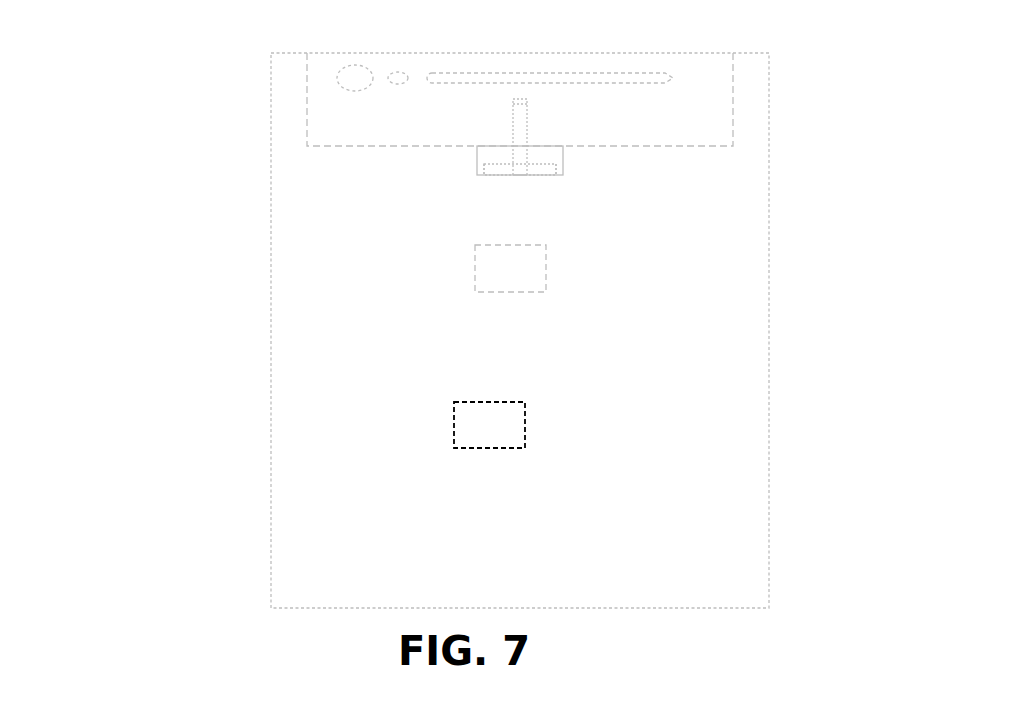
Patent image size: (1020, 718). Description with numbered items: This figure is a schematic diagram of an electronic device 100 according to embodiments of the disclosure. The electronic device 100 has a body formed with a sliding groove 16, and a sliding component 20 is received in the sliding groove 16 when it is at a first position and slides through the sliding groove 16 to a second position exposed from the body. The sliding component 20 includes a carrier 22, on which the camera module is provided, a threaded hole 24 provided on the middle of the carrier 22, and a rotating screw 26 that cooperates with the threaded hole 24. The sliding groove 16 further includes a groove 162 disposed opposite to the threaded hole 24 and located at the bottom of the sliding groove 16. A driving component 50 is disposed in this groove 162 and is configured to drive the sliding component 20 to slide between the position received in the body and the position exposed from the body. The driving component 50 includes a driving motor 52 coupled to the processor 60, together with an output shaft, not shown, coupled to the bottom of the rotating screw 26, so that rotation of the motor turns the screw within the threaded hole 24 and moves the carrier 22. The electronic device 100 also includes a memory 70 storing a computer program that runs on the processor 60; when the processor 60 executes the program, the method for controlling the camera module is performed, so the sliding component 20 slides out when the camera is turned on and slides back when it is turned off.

The electronic device 100 is at (132, 193).
The sliding groove 16 is at (307, 138).
The sliding component 20 is at (677, 60).
The carrier 22 is at (703, 78).
The threaded hole 24 is at (528, 99).
The rotating screw 26 is at (518, 113).
The groove 162 is at (547, 153).
The driving component 50 is at (537, 170).
The driving motor 52 is at (518, 168).
The processor 60 is at (512, 275).
The memory 70 is at (525, 425).